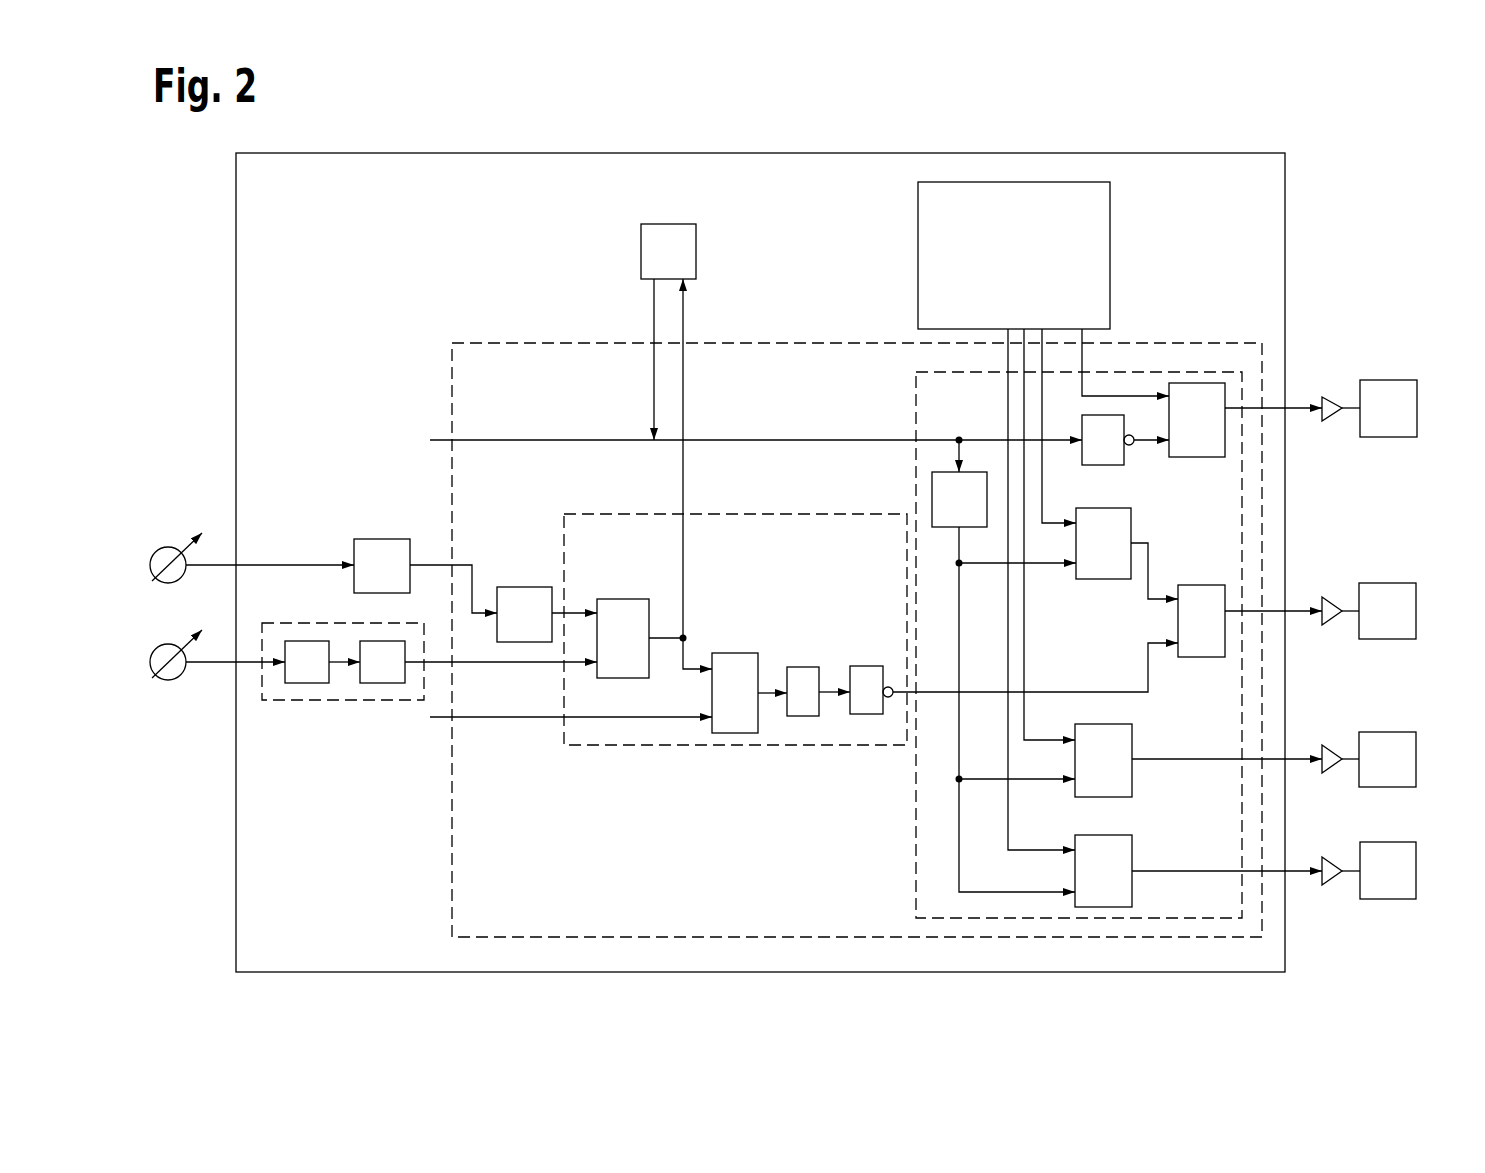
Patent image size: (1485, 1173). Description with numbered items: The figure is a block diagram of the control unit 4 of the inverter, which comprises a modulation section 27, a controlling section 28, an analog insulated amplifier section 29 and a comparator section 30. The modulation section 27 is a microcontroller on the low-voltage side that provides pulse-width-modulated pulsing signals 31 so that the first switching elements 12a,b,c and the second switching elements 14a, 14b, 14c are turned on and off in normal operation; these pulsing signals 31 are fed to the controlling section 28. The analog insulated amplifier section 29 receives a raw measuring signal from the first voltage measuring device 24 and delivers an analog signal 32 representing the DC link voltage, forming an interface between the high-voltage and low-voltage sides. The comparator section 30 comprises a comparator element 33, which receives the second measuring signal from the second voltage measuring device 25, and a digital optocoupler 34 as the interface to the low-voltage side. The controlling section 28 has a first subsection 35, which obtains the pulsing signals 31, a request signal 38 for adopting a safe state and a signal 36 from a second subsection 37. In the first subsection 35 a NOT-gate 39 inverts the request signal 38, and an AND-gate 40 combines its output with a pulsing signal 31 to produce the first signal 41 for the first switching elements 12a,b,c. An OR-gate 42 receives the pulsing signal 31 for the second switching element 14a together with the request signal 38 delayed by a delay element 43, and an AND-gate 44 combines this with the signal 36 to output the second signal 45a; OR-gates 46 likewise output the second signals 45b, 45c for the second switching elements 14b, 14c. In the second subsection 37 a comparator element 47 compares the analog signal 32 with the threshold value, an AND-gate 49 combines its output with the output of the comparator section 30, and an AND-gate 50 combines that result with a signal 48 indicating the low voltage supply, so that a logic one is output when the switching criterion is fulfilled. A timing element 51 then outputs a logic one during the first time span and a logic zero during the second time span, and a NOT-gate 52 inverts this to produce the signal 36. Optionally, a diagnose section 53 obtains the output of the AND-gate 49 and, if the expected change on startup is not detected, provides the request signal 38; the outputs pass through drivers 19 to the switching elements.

The control unit 4 is at (1285, 200).
The first switching elements 12a,b,c is at (1388, 380).
The second switching element 14a is at (1388, 583).
The second switching element 14b is at (1407, 732).
The second switching element 14c is at (1390, 900).
The output driver 19 is at (1335, 395).
The first voltage measuring device 24 is at (158, 552).
The second voltage measuring device 25 is at (158, 650).
The modulation section 27 is at (1110, 250).
The controlling section 28 is at (775, 343).
The analog insulated amplifier section 29 is at (382, 539).
The comparator section 30 is at (285, 700).
The pulsing signals 31 is at (1113, 337).
The analog signal 32 is at (472, 565).
The comparator element 33 is at (315, 683).
The digital optocoupler 34 is at (380, 683).
The first subsection 35 is at (916, 845).
The signal 36 is at (945, 690).
The second subsection 37 is at (610, 745).
The request signal 38 is at (565, 438).
The NOT-gate 39 is at (1105, 465).
The AND-gate 40 is at (1205, 457).
The first signal 41 is at (1295, 408).
The OR-gate 42 is at (1105, 579).
The delay element 43 is at (978, 472).
The AND-gate 44 is at (1205, 657).
The second signal 45a is at (1295, 611).
The second signal 45b is at (1295, 759).
The second signal 45c is at (1295, 871).
The OR-gates 46 is at (1132, 778).
The comparator element 47 is at (527, 587).
The signal 48 is at (437, 717).
The AND-gate 49 is at (622, 599).
The AND-gate 50 is at (735, 653).
The timing element 51 is at (805, 667).
The NOT-gate 52 is at (868, 666).
The diagnose section 53 is at (641, 246).